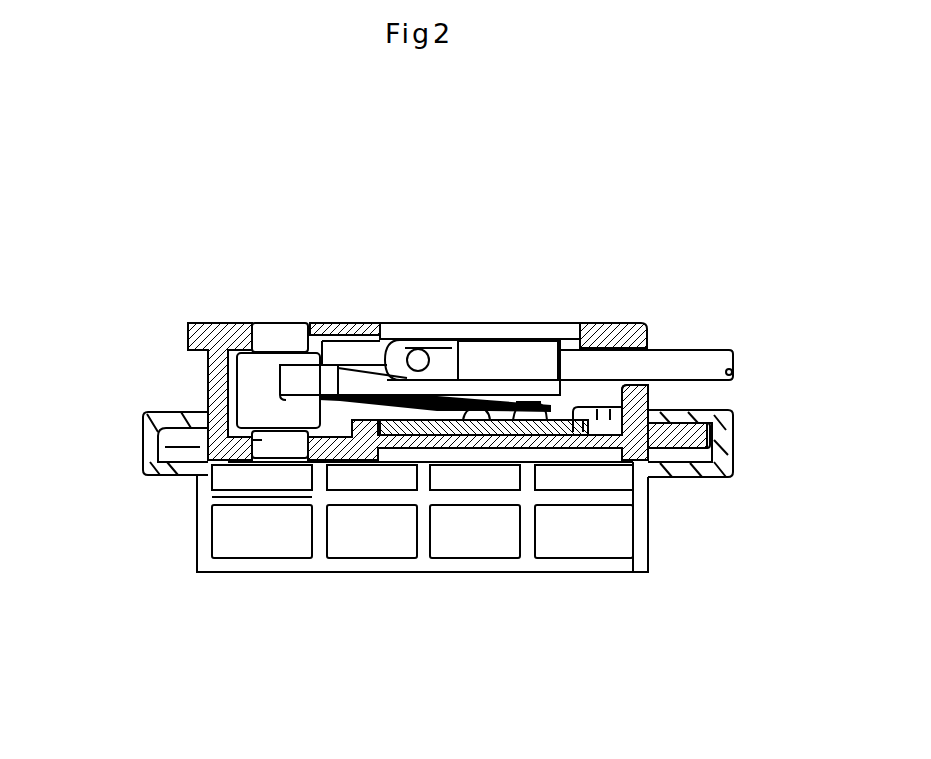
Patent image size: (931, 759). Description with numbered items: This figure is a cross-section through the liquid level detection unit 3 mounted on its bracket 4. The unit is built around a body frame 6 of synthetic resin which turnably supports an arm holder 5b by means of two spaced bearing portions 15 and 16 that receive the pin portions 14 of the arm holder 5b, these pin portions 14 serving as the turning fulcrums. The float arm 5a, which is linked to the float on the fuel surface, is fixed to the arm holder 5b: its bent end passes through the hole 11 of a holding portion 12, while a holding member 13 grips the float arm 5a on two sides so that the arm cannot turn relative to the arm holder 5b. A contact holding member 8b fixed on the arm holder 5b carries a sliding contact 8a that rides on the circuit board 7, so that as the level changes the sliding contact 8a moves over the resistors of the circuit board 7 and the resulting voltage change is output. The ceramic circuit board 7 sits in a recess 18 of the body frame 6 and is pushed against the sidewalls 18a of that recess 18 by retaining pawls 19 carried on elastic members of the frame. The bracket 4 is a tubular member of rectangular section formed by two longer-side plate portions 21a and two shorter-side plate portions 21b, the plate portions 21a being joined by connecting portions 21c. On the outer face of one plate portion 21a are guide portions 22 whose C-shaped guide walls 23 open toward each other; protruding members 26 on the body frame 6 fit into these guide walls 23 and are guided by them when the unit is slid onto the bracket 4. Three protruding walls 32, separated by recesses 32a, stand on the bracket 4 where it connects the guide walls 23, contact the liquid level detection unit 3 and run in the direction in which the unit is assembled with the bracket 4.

The liquid level detection unit 3 is at (346, 305).
The bracket 4 is at (245, 463).
The float arm 5a is at (717, 357).
The arm holder 5b is at (348, 382).
The body frame 6 is at (180, 382).
The circuit board 7 is at (632, 540).
The sliding contact 8a is at (520, 420).
The contact holding member 8b is at (475, 420).
The hole 11 is at (424, 350).
The holding portion 12 is at (439, 351).
The holding member 13 is at (503, 358).
The pin portions 14 is at (270, 323).
The bearing portion 15 is at (240, 323).
The bearing portion 16 is at (280, 455).
The recess 18 is at (465, 435).
The sidewalls 18a is at (318, 440).
The retaining pawls 19 is at (574, 407).
The plate portions for the longer sides 21a is at (600, 573).
The plate portions for the shorter sides 21b is at (643, 530).
The connecting portions 21c is at (283, 490).
The guide portions 22 is at (150, 393).
The guide walls 23 is at (146, 441).
The protruding members 26 is at (177, 447).
The protruding walls 32 is at (295, 465).
The recesses 32a is at (398, 500).